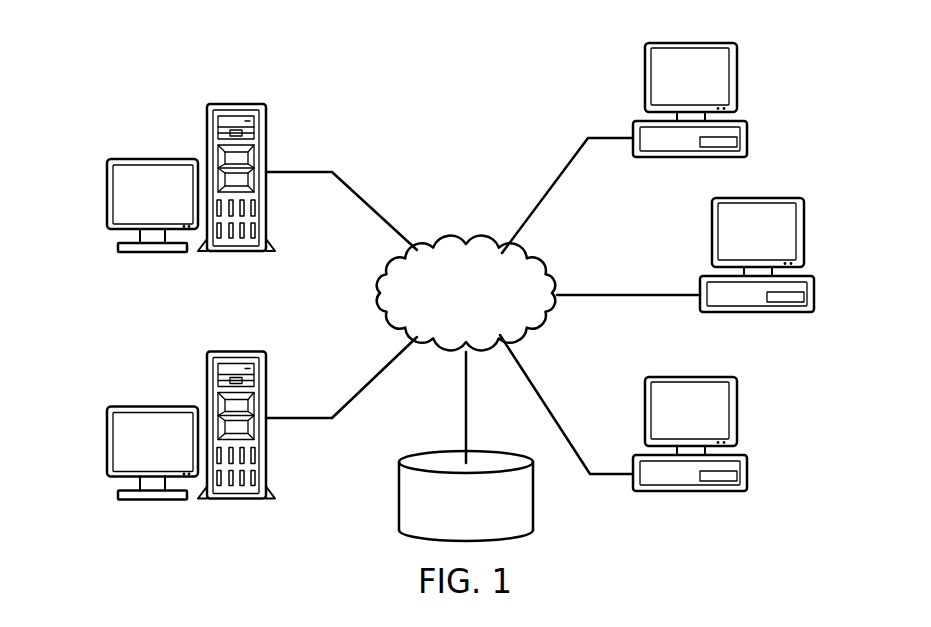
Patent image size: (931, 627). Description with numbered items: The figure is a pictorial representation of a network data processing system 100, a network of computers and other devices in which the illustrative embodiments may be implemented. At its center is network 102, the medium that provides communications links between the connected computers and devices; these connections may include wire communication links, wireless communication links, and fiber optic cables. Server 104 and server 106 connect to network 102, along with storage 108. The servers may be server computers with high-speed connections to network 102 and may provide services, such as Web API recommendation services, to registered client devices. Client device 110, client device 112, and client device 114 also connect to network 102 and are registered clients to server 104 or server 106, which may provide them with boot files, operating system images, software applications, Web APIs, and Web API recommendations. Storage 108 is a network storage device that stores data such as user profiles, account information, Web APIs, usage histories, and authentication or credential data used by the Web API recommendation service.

The network data processing system 100 is at (333, 84).
The network 102 is at (442, 243).
The server 104 is at (107, 438).
The server 106 is at (107, 193).
The storage 108 is at (398, 497).
The client device 110 is at (748, 129).
The client device 112 is at (815, 305).
The client device 114 is at (747, 480).